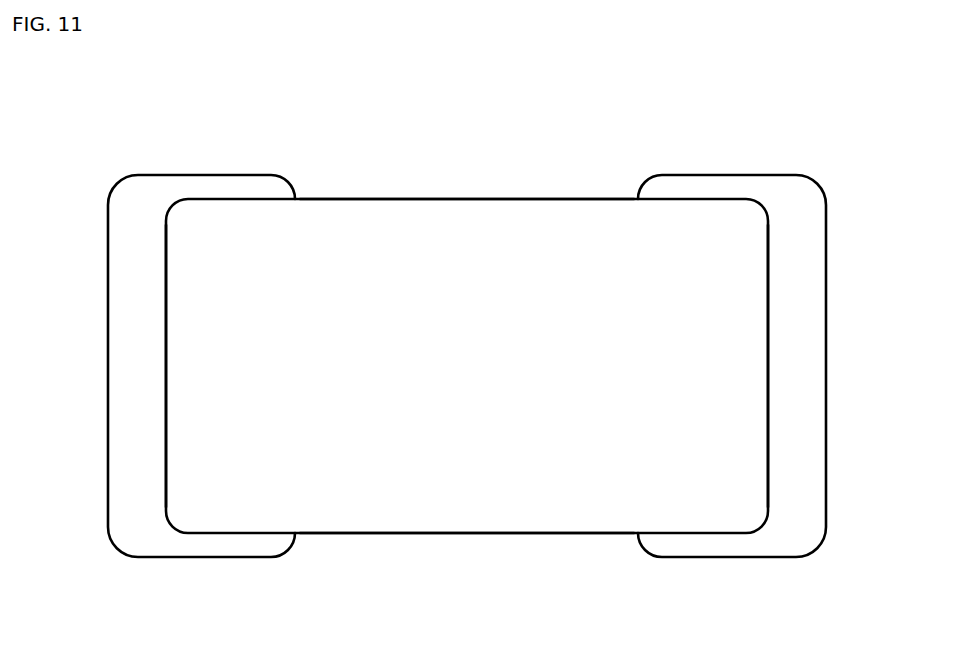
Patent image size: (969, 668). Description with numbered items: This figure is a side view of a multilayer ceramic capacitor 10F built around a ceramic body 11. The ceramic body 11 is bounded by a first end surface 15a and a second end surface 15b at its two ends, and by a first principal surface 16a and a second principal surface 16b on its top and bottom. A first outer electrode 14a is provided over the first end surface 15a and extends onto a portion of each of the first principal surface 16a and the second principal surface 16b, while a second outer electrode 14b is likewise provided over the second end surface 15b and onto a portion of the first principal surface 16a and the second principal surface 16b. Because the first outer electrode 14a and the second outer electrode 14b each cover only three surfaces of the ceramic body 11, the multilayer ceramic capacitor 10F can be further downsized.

The multilayer ceramic capacitor 10F is at (338, 153).
The ceramic body 11 is at (470, 199).
The first outer electrode 14a is at (108, 314).
The second outer electrode 14b is at (826, 317).
The first end surface 15a is at (166, 368).
The second end surface 15b is at (768, 398).
The first principal surface 16a is at (543, 199).
The second principal surface 16b is at (436, 533).